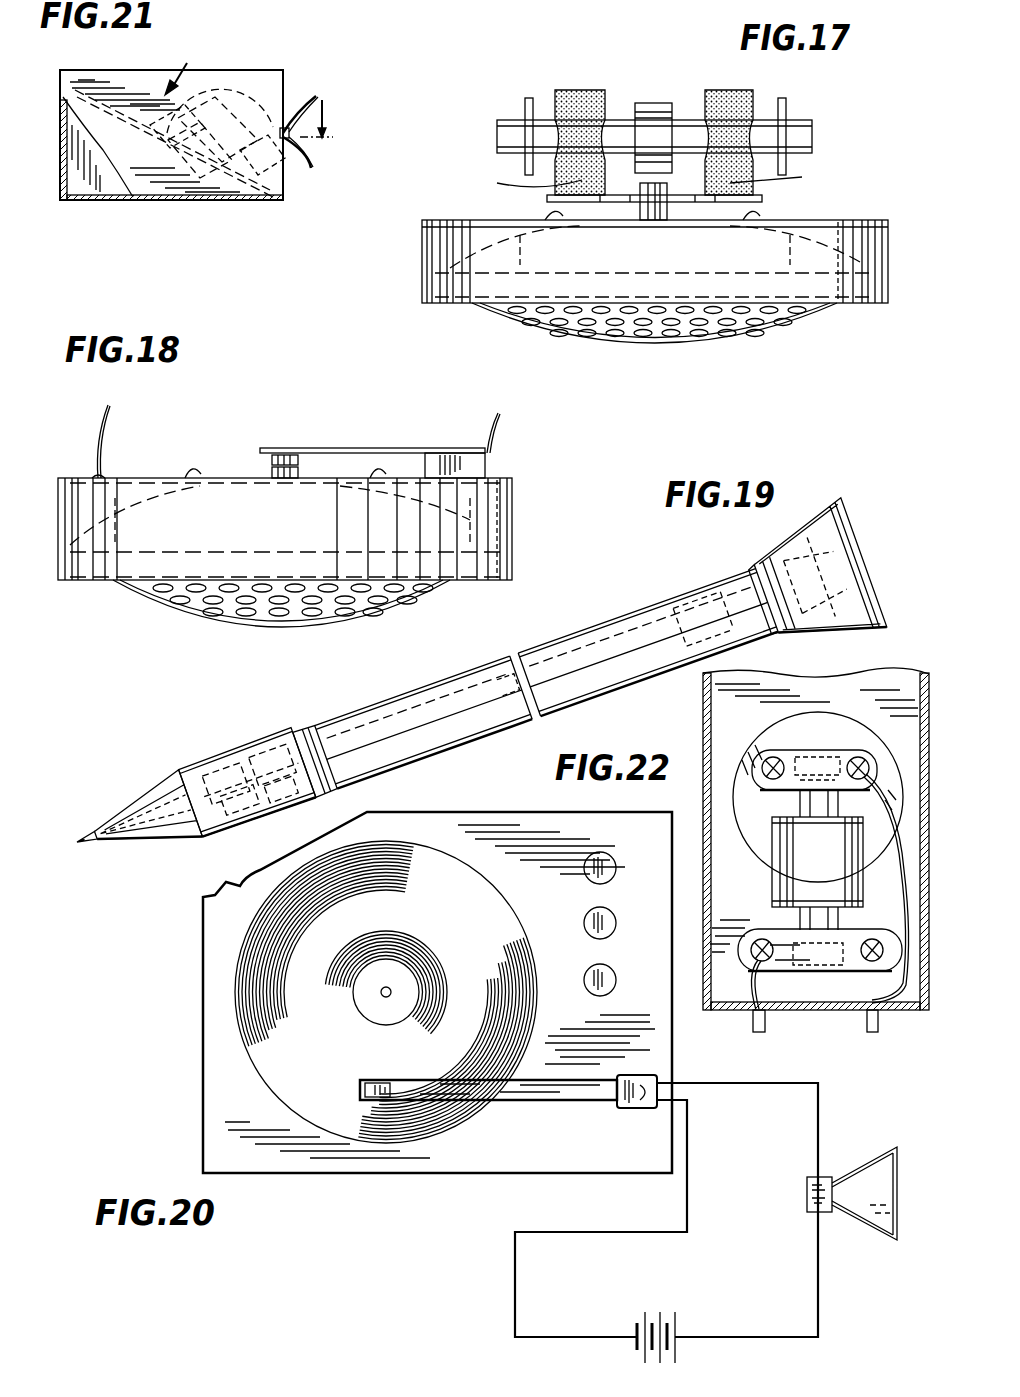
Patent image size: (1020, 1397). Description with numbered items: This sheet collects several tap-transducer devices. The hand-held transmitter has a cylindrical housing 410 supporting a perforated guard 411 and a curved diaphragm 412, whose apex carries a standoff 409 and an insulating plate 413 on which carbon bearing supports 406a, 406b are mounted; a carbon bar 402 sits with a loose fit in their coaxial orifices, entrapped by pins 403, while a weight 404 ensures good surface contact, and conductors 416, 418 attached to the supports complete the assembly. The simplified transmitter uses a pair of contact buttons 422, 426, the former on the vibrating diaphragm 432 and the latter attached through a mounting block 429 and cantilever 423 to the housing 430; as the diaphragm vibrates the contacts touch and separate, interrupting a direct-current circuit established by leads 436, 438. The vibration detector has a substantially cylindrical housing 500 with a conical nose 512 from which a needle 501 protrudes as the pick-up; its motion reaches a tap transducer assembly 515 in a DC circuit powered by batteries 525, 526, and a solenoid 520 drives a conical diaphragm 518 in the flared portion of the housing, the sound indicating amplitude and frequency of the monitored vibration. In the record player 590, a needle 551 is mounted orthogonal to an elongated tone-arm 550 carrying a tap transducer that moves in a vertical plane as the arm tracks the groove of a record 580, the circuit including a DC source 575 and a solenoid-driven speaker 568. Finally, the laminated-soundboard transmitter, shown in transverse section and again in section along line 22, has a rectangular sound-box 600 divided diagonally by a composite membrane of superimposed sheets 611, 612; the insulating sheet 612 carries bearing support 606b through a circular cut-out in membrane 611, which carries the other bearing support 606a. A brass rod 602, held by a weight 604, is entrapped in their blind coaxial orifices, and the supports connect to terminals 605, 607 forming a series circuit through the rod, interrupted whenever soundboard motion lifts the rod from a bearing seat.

In FIG. 21, the section line 22— 22 is at (263, 88).
In FIG. 21, the rectangular sound-box 600 is at (221, 132).
In FIG. 21, the rod 602 is at (290, 160).
In FIG. 22, the rod 602 is at (800, 806).
In FIG. 21, the weight 604 is at (240, 88).
In FIG. 22, the weight 604 is at (830, 865).
In FIG. 22, the electrical terminal 605 is at (758, 1032).
In FIG. 21, the bearing support 606a is at (277, 170).
In FIG. 22, the bearing support 606a is at (777, 930).
In FIG. 21, the bearing support 606b is at (197, 187).
In FIG. 22, the bearing support 606b is at (777, 760).
In FIG. 22, the electrical terminal 607 is at (867, 1031).
In FIG. 21, the membrane 611 is at (110, 78).
In FIG. 22, the membrane 611 is at (816, 839).
In FIG. 21, the membrane 612 is at (78, 57).
In FIG. 22, the membrane 612 is at (818, 795).
In FIG. 17, the bar 402 is at (813, 138).
In FIG. 17, the pins 403 is at (790, 104).
In FIG. 17, the weight 404 is at (638, 104).
In FIG. 17, the bearing support 406a is at (721, 95).
In FIG. 17, the bearing support 406b is at (581, 94).
In FIG. 17, the standoff 409 is at (638, 212).
In FIG. 17, the cylindrical housing 410 is at (887, 283).
In FIG. 17, the perforated guard 411 is at (800, 316).
In FIG. 17, the curved diaphragm 412 is at (845, 255).
In FIG. 17, the insulating plate 413 is at (763, 200).
In FIG. 17, the conductor 416 is at (802, 177).
In FIG. 17, the conductor 418 is at (497, 183).
In FIG. 18, the contact button 422 is at (283, 478).
In FIG. 18, the cantilever 423 is at (398, 448).
In FIG. 18, the contact button 426 is at (270, 455).
In FIG. 18, the mounting block 429 is at (480, 466).
In FIG. 18, the housing 430 is at (512, 545).
In FIG. 18, the diaphragm 432 is at (513, 511).
In FIG. 18, the lead 436 is at (492, 426).
In FIG. 18, the lead 438 is at (109, 435).
In FIG. 19, the cylindrical housing 500 is at (303, 727).
In FIG. 19, the needle 501 is at (88, 830).
In FIG. 19, the conical nose 512 is at (176, 778).
In FIG. 19, the tap transducer assembly 515 is at (287, 723).
In FIG. 19, the conical diaphragm 518 is at (870, 567).
In FIG. 19, the solenoid 520 is at (757, 566).
In FIG. 19, the battery 525 is at (458, 716).
In FIG. 19, the battery 526 is at (612, 656).
In FIG. 20, the tone-arm 550 is at (417, 1083).
In FIG. 20, the needle 551 is at (365, 1081).
In FIG. 20, the solenoid-driven speaker 568 is at (870, 1173).
In FIG. 20, the DC source 575 is at (658, 1320).
In FIG. 20, the record 580 is at (425, 915).
In FIG. 20, the record player 590 is at (568, 915).